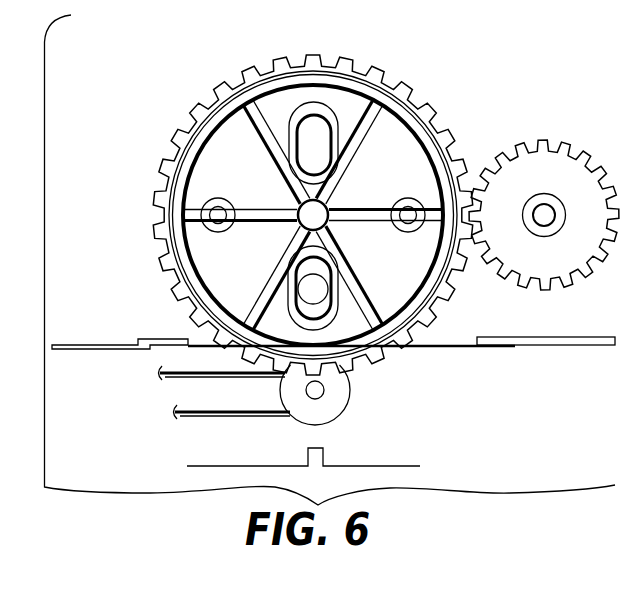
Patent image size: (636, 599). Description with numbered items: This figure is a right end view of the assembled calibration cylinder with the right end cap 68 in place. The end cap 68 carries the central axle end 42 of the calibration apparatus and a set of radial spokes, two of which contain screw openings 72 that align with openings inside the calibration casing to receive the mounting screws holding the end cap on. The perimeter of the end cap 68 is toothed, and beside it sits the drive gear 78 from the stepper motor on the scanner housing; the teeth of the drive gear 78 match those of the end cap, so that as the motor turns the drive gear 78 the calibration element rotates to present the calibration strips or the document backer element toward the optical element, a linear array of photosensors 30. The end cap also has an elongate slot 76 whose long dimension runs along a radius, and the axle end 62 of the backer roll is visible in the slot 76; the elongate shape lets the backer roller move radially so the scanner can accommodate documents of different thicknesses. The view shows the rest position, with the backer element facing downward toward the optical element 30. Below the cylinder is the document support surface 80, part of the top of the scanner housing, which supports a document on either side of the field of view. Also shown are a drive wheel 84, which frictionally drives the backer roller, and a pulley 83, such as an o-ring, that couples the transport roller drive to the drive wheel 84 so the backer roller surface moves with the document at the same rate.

The right end cap 68 is at (162, 162).
The screw openings 72 is at (220, 212).
The central axle ends 42 is at (319, 211).
The axle of the backer roll 62 is at (310, 291).
The elongate slot 76 is at (316, 272).
The drive gear 78 is at (523, 150).
The document support surface 80 is at (523, 342).
The drive wheel 84 is at (338, 398).
The pulley 83 is at (198, 415).
The photosensors 30 is at (322, 447).